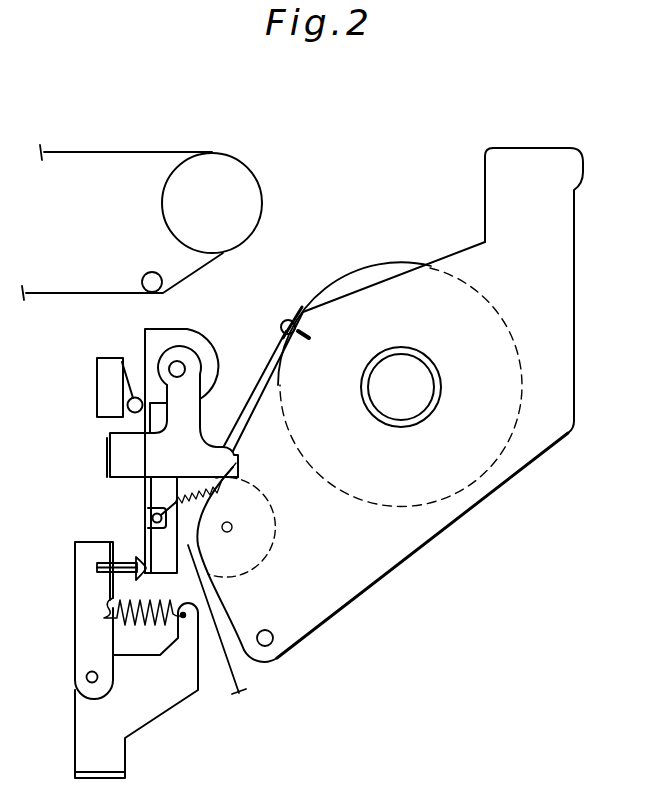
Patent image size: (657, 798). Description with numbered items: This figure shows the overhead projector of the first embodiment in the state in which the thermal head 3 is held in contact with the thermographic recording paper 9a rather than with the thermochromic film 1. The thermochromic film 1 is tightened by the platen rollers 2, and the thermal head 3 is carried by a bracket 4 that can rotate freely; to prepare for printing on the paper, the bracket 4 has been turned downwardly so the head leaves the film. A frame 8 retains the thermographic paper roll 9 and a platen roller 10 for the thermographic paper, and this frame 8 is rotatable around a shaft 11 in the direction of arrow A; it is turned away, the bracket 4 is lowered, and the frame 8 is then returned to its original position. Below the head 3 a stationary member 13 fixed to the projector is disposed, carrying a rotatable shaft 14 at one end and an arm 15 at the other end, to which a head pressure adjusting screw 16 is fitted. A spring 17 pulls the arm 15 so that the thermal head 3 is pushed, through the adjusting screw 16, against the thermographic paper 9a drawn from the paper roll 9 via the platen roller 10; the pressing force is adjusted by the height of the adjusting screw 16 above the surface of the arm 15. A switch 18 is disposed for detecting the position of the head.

The thermochromic film 1 is at (50, 292).
The platen rollers 2 is at (243, 170).
The thermal head 3 is at (157, 493).
The bracket 4 is at (196, 346).
The frame 8 is at (574, 231).
The thermographic paper roll 9 is at (393, 260).
The thermographic recording paper 9a is at (228, 672).
The platen roller 10 is at (258, 529).
The shaft 11 is at (273, 645).
The stationary member 13 is at (75, 741).
The rotatable shaft 14 is at (82, 676).
The arm 15 is at (75, 587).
The head pressure adjusting screw 16 is at (127, 560).
The spring 17 is at (148, 632).
The switch 18 is at (100, 391).